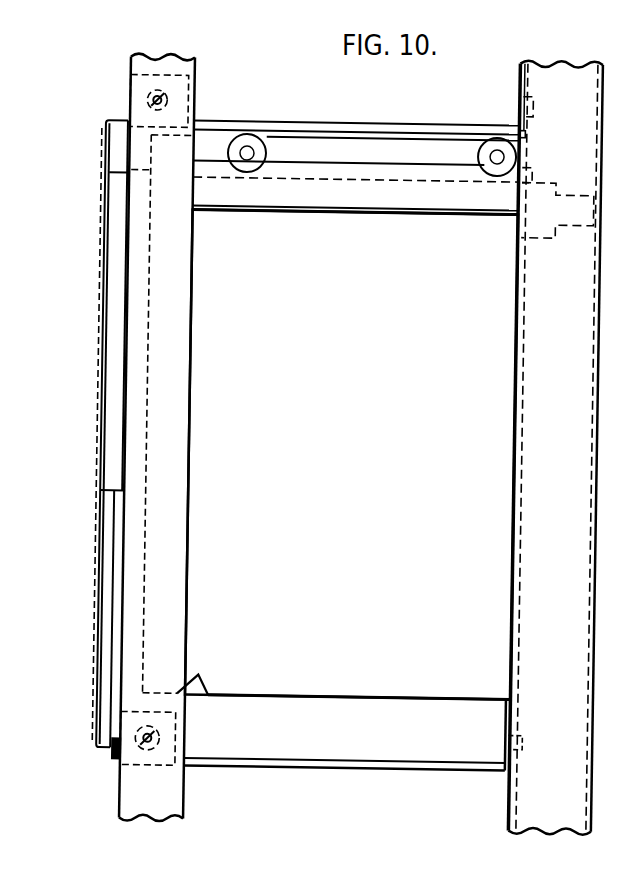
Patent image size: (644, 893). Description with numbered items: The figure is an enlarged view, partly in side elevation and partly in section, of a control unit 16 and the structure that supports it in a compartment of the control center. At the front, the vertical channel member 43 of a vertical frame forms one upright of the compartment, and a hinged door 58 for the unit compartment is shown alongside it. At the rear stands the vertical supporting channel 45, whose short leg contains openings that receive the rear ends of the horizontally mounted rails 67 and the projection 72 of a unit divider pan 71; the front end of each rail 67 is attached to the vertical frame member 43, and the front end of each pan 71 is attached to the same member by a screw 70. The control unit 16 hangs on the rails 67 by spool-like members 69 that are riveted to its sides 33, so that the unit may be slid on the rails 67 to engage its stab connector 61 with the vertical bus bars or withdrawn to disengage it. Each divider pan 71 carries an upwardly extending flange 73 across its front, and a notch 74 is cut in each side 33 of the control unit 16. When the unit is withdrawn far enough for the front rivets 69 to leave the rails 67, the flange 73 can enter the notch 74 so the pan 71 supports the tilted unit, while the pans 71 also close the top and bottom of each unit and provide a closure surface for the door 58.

The control unit 16 is at (344, 362).
The side of the control unit 33 is at (436, 697).
The vertical channel member 43 is at (124, 809).
The vertical supporting channel 45 is at (600, 451).
The hinged door 58 is at (100, 428).
The stab connector 61 is at (569, 191).
The rail 67 is at (416, 211).
The spool-like member 69 is at (240, 137).
The screw 70 is at (162, 741).
The unit divider pan 71 is at (328, 124).
The projection 72 is at (527, 747).
The upwardly extending flange 73 is at (117, 759).
The notch 74 is at (210, 689).